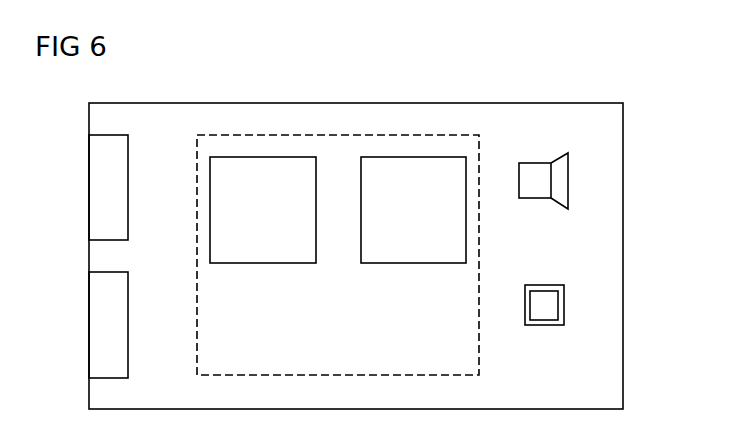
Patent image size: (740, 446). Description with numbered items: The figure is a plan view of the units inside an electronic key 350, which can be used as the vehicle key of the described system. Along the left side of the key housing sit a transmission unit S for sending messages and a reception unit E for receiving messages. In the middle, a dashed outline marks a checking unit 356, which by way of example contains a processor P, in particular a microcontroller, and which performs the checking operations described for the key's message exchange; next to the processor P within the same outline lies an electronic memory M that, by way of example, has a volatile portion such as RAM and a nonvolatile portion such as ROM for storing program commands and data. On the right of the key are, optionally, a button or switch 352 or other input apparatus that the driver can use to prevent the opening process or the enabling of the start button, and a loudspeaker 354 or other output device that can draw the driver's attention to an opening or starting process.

The electronic key 350 is at (455, 103).
The button or switch 352 is at (565, 300).
The loudspeaker 354 is at (526, 163).
The checking unit 356 is at (348, 135).
The processor P is at (252, 157).
The electronic memory M is at (405, 157).
The transmission unit S is at (104, 190).
The reception unit E is at (104, 330).